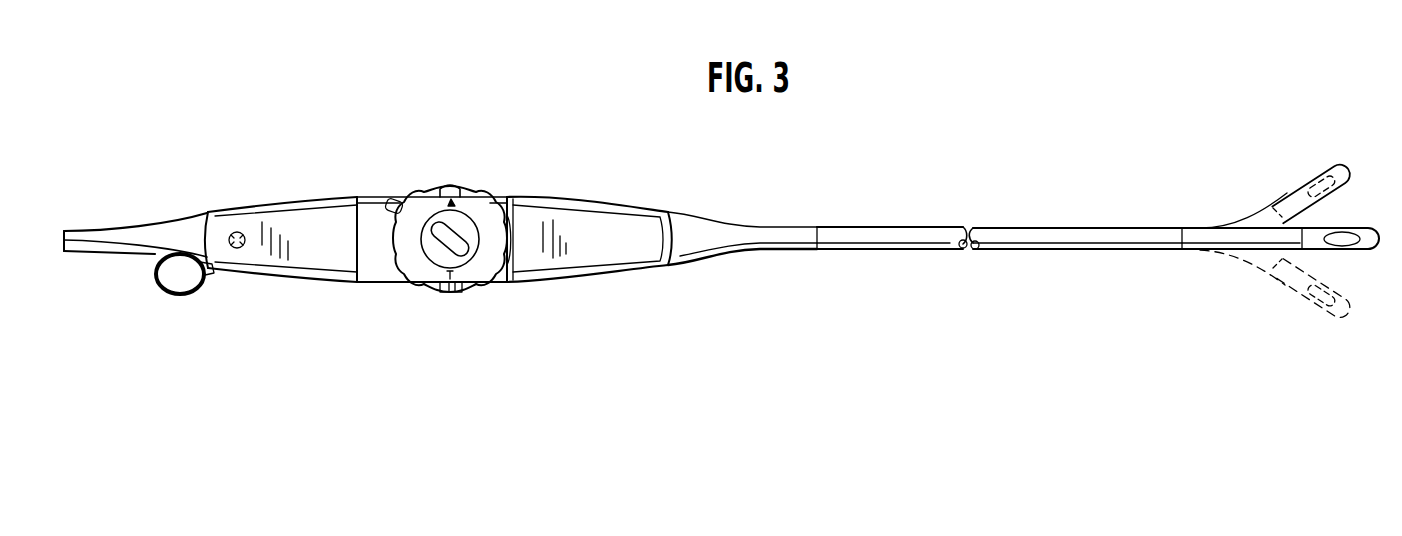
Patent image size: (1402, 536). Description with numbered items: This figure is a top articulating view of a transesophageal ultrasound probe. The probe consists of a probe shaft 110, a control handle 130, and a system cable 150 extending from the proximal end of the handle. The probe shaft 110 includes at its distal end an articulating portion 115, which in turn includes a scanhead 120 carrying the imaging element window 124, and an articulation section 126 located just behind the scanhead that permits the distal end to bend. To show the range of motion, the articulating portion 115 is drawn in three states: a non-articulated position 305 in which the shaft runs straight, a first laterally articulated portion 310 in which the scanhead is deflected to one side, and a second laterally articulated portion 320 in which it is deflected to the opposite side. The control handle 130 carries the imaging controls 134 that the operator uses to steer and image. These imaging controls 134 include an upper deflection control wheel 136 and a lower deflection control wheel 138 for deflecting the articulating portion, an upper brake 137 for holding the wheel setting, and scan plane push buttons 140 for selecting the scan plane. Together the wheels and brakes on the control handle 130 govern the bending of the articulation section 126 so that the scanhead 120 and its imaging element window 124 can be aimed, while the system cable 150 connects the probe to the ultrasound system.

The probe shaft 110 is at (1382, 408).
The articulating portion 115 is at (1375, 360).
The scanhead 120 is at (1303, 260).
The imaging element window 124 is at (1337, 244).
The articulation section 126 is at (1292, 323).
The control handle 130 is at (668, 320).
The imaging controls 134 is at (515, 130).
The upper deflection control wheel 136 is at (465, 290).
The upper brake 137 is at (433, 290).
The lower deflection control wheel 138 is at (510, 282).
The scan plane push buttons 140 is at (413, 188).
The system cable 150 is at (112, 252).
The non-articulated position 305 is at (1376, 258).
The first laterally articulated portion 310 is at (1276, 192).
The second laterally articulated portion 320 is at (1268, 288).